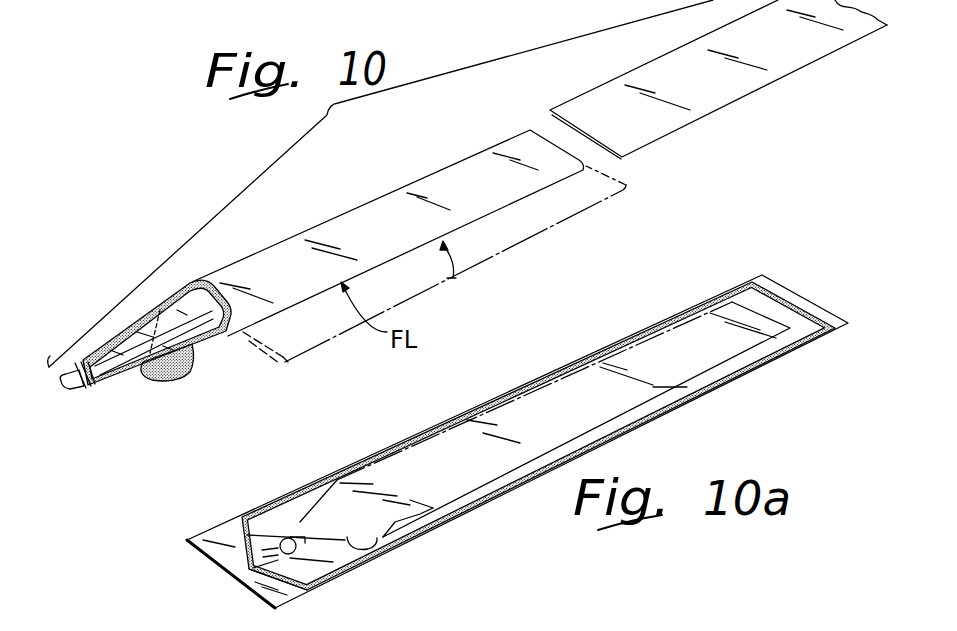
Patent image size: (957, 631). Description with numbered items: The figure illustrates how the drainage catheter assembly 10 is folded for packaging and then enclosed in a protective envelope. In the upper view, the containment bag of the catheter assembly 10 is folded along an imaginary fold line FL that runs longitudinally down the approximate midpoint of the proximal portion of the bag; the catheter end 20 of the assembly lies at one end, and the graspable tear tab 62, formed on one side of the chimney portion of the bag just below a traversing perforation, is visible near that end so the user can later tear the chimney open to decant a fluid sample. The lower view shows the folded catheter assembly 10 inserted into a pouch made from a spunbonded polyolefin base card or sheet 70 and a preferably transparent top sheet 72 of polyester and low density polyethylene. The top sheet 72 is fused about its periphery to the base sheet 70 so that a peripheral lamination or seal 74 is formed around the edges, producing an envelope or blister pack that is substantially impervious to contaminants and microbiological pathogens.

In FIG. 10, the drainage catheter assembly 10 is at (477, 151).
In FIG. 10, the nose piece 20 is at (78, 392).
In FIG. 10, the tear tab 62 is at (170, 368).
In FIG. 10, the base card or sheet 70 is at (722, 97).
In FIG. 10A, the base card or sheet 70 is at (203, 541).
In FIG. 10A, the top sheet 72 is at (350, 556).
In FIG. 10A, the peripheral lamination or seal 74 is at (293, 582).